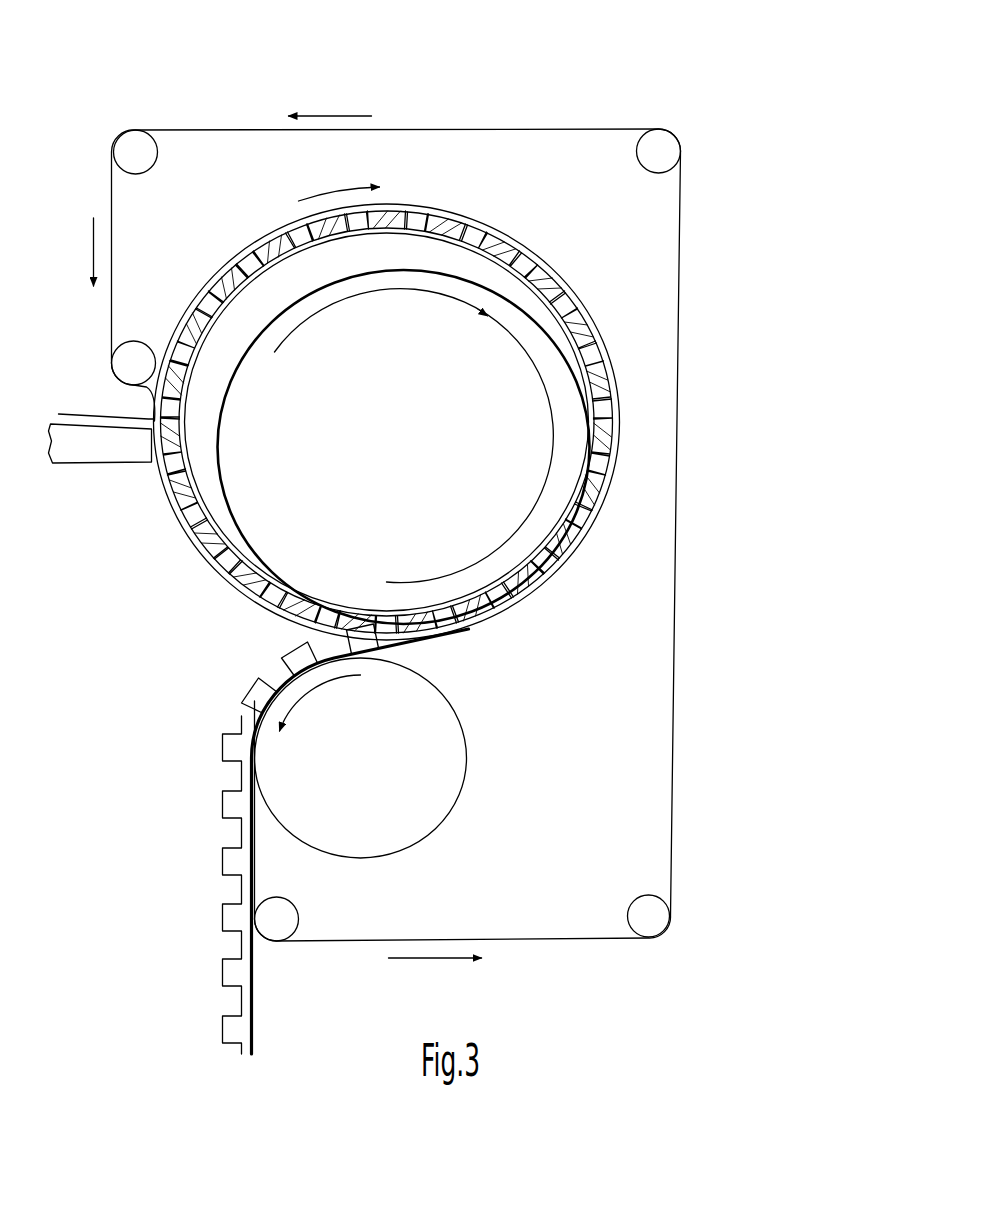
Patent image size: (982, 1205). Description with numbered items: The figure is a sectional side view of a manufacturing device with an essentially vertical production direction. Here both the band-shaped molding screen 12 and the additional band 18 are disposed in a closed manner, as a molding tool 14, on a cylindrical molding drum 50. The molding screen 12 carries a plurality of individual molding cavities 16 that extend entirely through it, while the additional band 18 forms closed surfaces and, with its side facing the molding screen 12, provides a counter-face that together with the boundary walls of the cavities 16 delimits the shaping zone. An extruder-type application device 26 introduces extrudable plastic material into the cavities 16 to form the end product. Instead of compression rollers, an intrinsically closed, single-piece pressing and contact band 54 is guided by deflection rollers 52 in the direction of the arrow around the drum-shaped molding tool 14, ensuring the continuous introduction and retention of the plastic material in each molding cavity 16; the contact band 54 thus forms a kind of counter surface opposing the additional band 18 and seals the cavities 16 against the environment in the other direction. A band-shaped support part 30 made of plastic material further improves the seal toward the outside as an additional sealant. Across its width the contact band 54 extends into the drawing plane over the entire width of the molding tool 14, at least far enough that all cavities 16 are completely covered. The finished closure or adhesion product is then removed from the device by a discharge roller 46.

The band-shaped molding screen 12 is at (513, 597).
The molding tool 14 is at (575, 277).
The molding cavities 16 is at (512, 253).
The additional band 18 is at (217, 540).
The application device 26 is at (87, 440).
The band-shaped support part 30 is at (585, 545).
The discharge roller 46 is at (445, 747).
The cylindrical molding drum 50 is at (502, 417).
The deflection rollers 52 is at (133, 143).
The pressing and contact band 54 is at (552, 127).